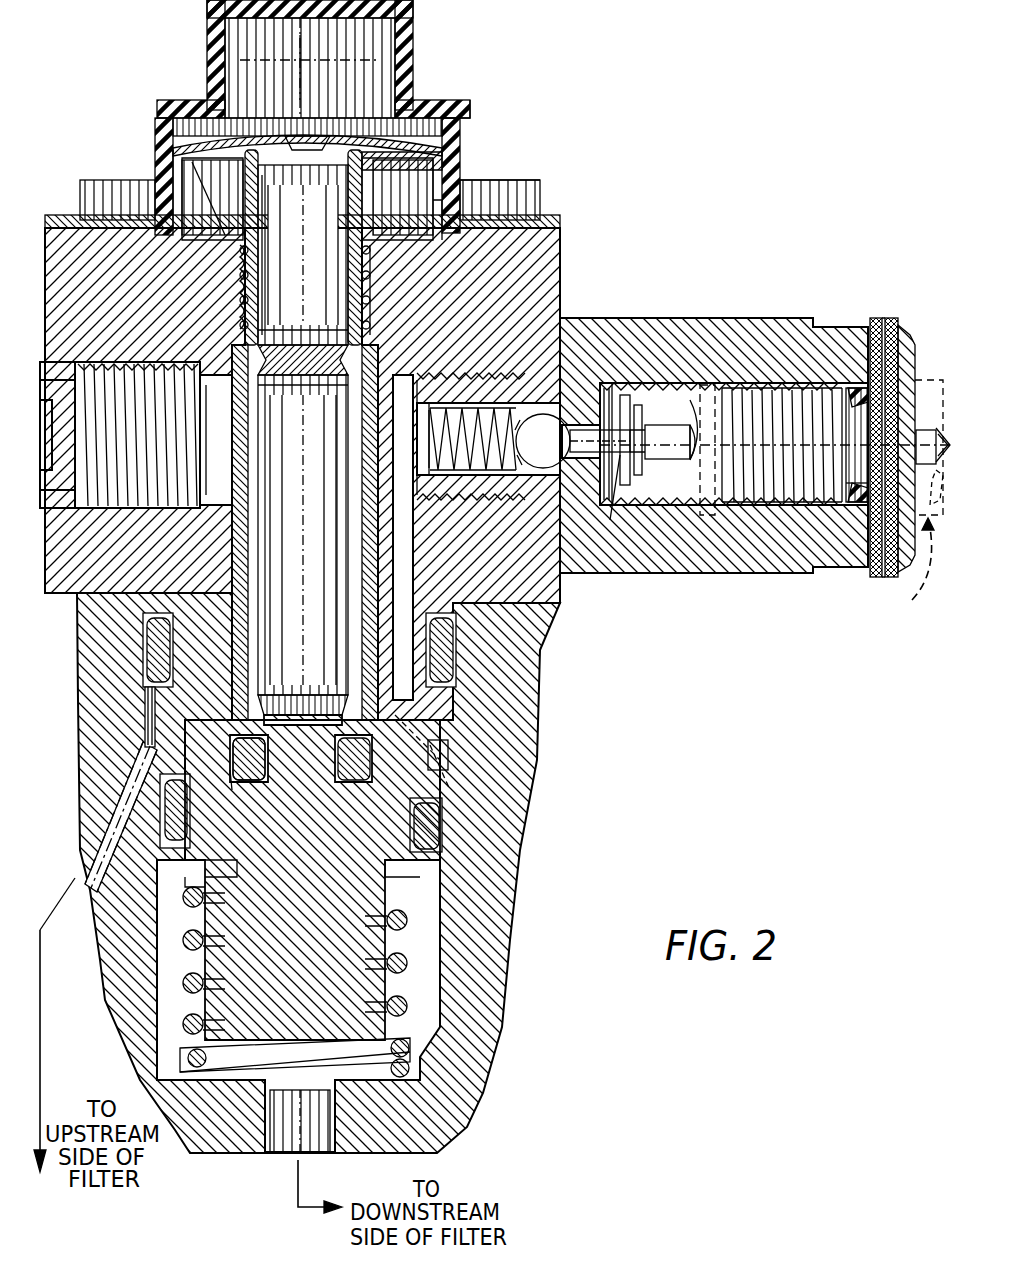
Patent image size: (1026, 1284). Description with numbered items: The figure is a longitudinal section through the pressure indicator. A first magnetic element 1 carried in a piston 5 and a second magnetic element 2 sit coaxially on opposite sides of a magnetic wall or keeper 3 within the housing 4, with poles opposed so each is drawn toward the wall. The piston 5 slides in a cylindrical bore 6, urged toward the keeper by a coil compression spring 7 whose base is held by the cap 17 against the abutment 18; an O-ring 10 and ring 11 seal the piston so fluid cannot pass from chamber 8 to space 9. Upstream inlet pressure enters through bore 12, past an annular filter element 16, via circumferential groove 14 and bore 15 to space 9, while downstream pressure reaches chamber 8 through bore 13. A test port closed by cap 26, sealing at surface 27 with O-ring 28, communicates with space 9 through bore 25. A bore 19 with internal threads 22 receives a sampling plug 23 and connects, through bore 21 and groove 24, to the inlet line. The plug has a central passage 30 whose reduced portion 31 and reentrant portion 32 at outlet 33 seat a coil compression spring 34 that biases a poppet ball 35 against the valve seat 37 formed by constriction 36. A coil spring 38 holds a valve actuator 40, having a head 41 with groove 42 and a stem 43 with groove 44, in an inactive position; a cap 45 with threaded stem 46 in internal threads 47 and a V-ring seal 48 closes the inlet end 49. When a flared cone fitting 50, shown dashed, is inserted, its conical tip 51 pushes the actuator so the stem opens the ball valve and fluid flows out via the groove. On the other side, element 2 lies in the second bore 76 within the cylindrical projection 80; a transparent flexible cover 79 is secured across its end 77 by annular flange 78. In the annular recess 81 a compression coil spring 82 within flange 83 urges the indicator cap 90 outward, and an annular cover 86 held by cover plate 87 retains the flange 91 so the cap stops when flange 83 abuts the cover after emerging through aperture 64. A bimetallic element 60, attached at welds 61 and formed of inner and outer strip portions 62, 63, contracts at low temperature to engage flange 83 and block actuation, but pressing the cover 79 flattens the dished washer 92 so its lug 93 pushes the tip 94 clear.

The first magnetic element 1 is at (300, 544).
The second magnetic element 2 is at (304, 266).
The separating wall or keeper 3 is at (260, 358).
The housing 4 is at (570, 288).
The piston 5 is at (304, 856).
The cylindrical bore 6 is at (236, 592).
The bias means 7 is at (410, 918).
The chamber 8 is at (420, 954).
The space 9 is at (382, 370).
The O-ring 10 is at (268, 760).
The ring 11 is at (236, 784).
The bore 12 is at (122, 790).
The bore 13 is at (318, 1132).
The circumferential groove 14 is at (448, 778).
The bore 15 is at (412, 759).
The annular filter element 16 is at (152, 735).
The cap 17 is at (490, 846).
The abutment 18 is at (182, 882).
The bore 19 is at (420, 378).
The bore 21 is at (412, 562).
The internal threads 22 is at (470, 375).
The sampling plug 23 is at (652, 312).
The groove 24 is at (450, 748).
The bore 25 is at (215, 400).
The cap 26 is at (60, 596).
The surface 27 is at (88, 366).
The O-ring 28 is at (78, 510).
The central passage 30 is at (712, 378).
The reduced portion 31 is at (500, 478).
The reentrant portion 32 is at (348, 420).
The outlet 33 is at (417, 455).
The coil compression spring 34 is at (452, 478).
The poppet ball 35 is at (530, 418).
The constriction 36 is at (574, 470).
The valve seat 37 is at (574, 428).
The coil spring 38 is at (612, 385).
The valve actuator 40 is at (684, 476).
The head 41 is at (634, 462).
The groove 42 is at (676, 424).
The stem 43 is at (626, 503).
The groove 44 is at (642, 425).
The cap 45 is at (892, 318).
The threaded stem 46 is at (788, 386).
The internal threads 47 is at (692, 398).
The V-ring seal 48 is at (852, 504).
The inlet end 49 is at (856, 386).
The threaded flared cone fitting 50 is at (923, 504).
The conical tip 51 is at (688, 540).
The bimetallic element 60 is at (155, 182).
The welds 61 is at (436, 248).
The inner strip portion 62 is at (425, 200).
The outer strip portion 63 is at (470, 182).
The aperture 64 is at (448, 148).
The second bore 76 is at (260, 338).
The end 77 is at (280, 150).
The annular flange 78 is at (320, 138).
The transparent flexible plastic cover 79 is at (205, 14).
The cylindrical projection 80 is at (348, 206).
The annular recess 81 is at (400, 262).
The second bias means 82 is at (240, 290).
The flange 83 is at (240, 238).
The annular cover 86 is at (460, 118).
The cover plate 87 is at (548, 224).
The indicator cap 90 is at (395, 30).
The flange 91 is at (185, 120).
The dished washer 92 is at (360, 120).
The lug 93 is at (160, 140).
The tip 94 is at (182, 170).